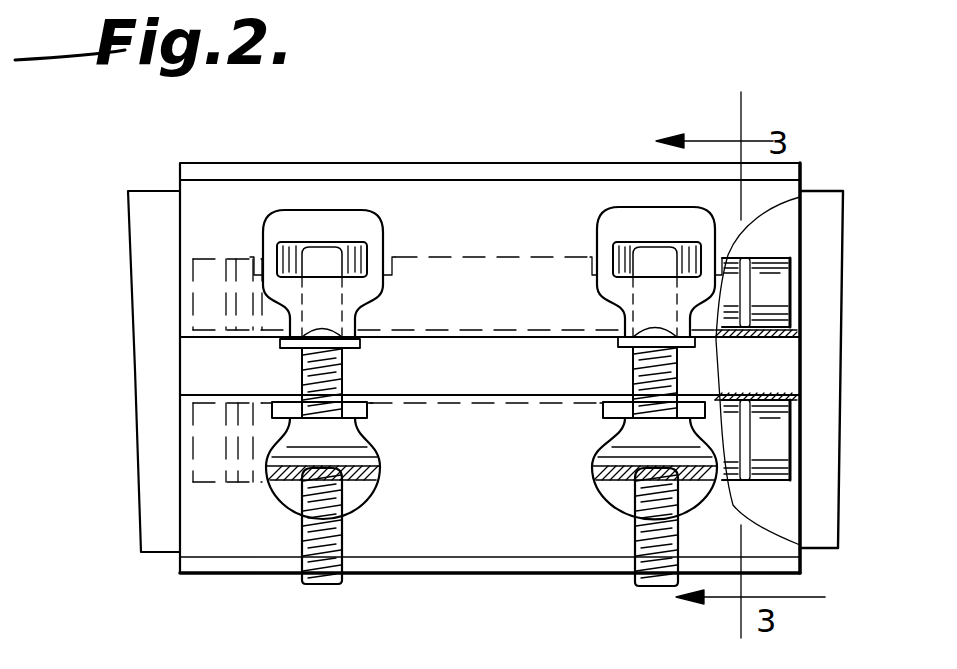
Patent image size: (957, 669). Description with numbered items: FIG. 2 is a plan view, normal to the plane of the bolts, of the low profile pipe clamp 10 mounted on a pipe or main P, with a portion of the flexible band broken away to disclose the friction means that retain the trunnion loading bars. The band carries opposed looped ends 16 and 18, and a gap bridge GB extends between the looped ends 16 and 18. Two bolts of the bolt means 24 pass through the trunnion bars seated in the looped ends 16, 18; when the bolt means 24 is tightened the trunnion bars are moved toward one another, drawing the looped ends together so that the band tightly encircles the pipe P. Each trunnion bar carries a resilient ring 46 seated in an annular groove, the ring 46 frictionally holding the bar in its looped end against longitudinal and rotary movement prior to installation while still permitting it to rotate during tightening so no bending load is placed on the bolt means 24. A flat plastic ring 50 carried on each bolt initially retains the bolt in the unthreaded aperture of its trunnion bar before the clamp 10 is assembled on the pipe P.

The low profile pipe clamp 10 is at (566, 160).
The looped end 16 is at (180, 248).
The looped end 18 is at (180, 449).
The bolt means 24 is at (347, 542).
The resilient ring 46 is at (748, 258).
The flat plastic ring 50 is at (360, 339).
The gap bridge GB is at (268, 384).
The pipe P is at (817, 190).